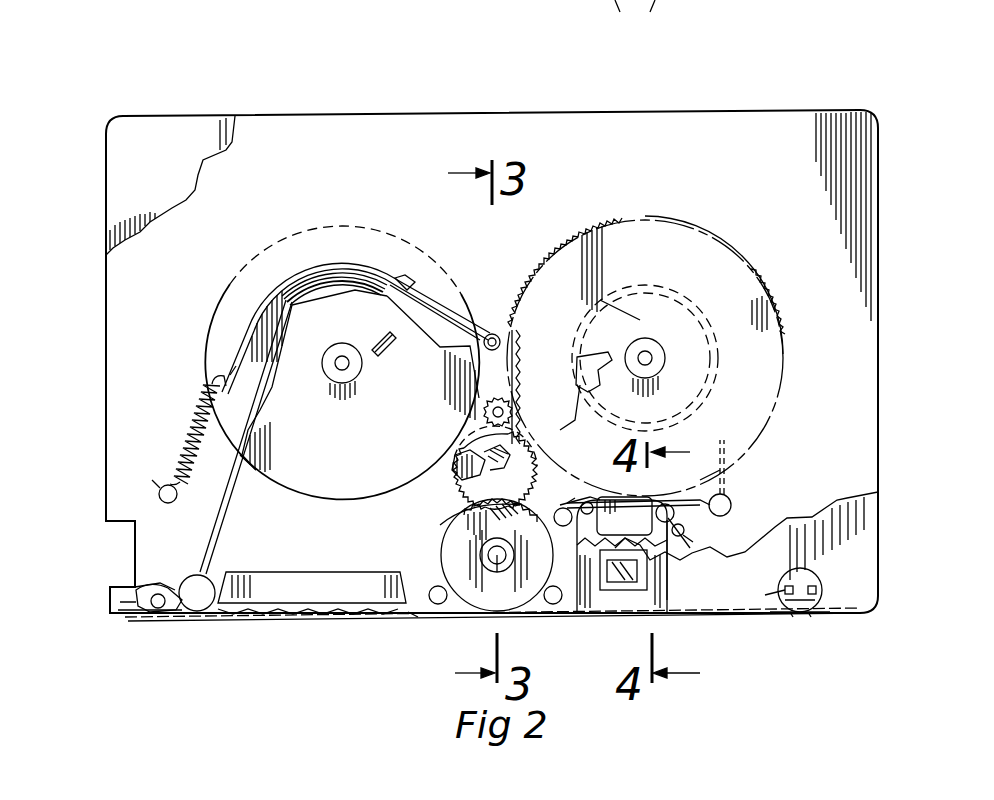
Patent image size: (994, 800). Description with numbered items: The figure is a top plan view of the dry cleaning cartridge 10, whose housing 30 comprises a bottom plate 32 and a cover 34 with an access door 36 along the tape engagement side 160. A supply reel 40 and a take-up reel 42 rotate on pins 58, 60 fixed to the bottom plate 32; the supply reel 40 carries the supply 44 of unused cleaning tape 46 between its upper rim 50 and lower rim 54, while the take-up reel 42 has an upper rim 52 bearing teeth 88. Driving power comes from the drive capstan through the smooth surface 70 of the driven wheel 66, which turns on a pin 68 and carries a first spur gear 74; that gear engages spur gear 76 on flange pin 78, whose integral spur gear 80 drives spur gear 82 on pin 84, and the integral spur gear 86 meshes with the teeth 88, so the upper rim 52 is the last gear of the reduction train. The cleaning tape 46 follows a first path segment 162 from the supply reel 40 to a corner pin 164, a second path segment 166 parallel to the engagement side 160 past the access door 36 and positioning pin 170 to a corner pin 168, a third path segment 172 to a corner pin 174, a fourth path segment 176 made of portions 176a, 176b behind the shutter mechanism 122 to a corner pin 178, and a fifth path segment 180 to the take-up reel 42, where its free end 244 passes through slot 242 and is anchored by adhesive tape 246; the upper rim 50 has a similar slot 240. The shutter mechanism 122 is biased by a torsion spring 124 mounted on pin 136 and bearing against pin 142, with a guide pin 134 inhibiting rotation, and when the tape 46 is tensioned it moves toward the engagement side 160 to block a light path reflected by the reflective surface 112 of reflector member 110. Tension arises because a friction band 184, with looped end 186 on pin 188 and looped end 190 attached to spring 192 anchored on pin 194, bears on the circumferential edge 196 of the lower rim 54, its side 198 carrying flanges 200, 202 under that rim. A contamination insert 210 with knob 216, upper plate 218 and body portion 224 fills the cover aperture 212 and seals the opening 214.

The dry cleaning cartridge 10 is at (173, 87).
The housing 30 is at (97, 109).
The bottom plate 32 is at (785, 146).
The cover 34 is at (140, 160).
The access door 36 is at (262, 612).
The supply reel 40 is at (212, 276).
The take-up reel 42 is at (779, 299).
The supply of unused cleaning tape 44 is at (262, 378).
The cleaning tape 46 is at (186, 548).
The upper rim of supply reel 50 is at (325, 488).
The upper rim of take-up reel 52 is at (648, 262).
The lower rim of supply reel 54 is at (290, 283).
The pin 58 is at (362, 370).
The pin 60 is at (650, 355).
The driven wheel 66 is at (491, 625).
The pin 68 is at (490, 560).
The smooth surface 70 is at (480, 553).
The first spur gear 74 is at (465, 525).
The spur gear 76 is at (455, 510).
The flange pin 78 is at (462, 480).
The spur gear 80 is at (455, 462).
The spur gear 82 is at (462, 447).
The pin 84 is at (482, 398).
The spur gear 86 is at (482, 410).
The teeth 88 is at (585, 232).
The reflector member 110 is at (600, 598).
The reflective surface 112 is at (625, 582).
The shutter mechanism 122 is at (634, 534).
The torsion spring 124 is at (668, 600).
The guide pin 134 is at (565, 492).
The pin 136 is at (665, 504).
The pin 142 is at (686, 547).
The tape engagement side 160 is at (720, 639).
The first path segment 162 is at (232, 548).
The corner pin 164 is at (150, 585).
The second path segment 166 is at (407, 634).
The corner pin 168 is at (550, 604).
The positioning pin 170 is at (438, 604).
The third path segment 172 is at (540, 572).
The corner pin 174 is at (530, 523).
The fourth path segment 176 is at (708, 521).
The path portion 176a is at (579, 487).
The path portion 176b is at (697, 484).
The corner pin 178 is at (732, 500).
The fifth path segment 180 is at (741, 488).
The friction band 184 is at (455, 292).
The looped end 186 is at (502, 345).
The pin 188 is at (492, 335).
The looped end 190 is at (210, 385).
The spring 192 is at (212, 440).
The pin 194 is at (150, 498).
The circumferential edge 196 is at (262, 438).
The side 198 is at (455, 282).
The flange 200 is at (402, 325).
The flange 202 is at (236, 368).
The contamination insert 210 is at (808, 563).
The aperture 212 is at (818, 584).
The opening 214 is at (810, 617).
The knob 216 is at (815, 560).
The upper plate 218 is at (790, 616).
The body portion 224 is at (665, 297).
The slot 240 is at (380, 353).
The slot 242 is at (627, 318).
The free end 244 is at (558, 407).
The adhesive tape 246 is at (578, 368).